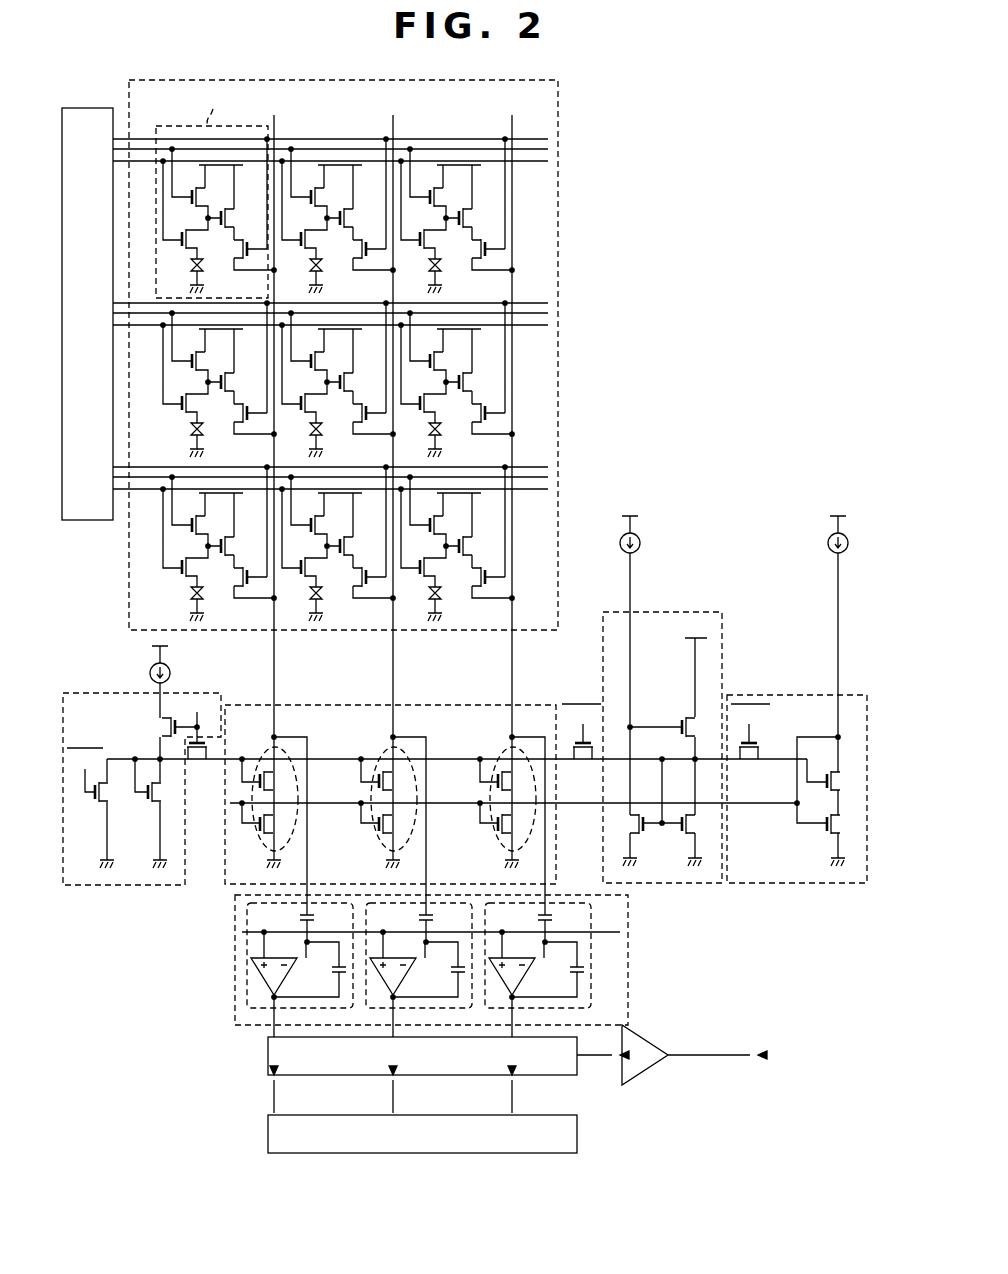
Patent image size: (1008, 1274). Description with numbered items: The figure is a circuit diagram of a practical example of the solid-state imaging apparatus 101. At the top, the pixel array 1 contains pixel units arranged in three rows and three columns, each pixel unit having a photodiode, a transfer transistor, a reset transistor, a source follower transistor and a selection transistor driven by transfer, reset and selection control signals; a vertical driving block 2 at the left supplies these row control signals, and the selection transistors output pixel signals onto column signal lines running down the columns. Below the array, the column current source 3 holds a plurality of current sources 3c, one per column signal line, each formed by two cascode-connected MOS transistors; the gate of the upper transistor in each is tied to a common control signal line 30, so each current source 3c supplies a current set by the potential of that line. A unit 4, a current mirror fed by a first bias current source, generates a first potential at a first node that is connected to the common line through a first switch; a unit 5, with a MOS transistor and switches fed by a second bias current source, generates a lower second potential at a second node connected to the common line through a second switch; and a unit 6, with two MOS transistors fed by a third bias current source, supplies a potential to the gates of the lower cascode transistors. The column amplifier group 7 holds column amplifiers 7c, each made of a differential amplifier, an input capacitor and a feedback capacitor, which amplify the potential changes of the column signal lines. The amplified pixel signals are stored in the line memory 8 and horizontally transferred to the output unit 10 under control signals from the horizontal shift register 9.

The solid-state imaging apparatus 101 is at (728, 141).
The pixel array 1 is at (562, 192).
The vertical scanning circuit 2 is at (95, 108).
The column current source 3 is at (344, 703).
The current source 3c is at (268, 844).
The unit 4 is at (699, 611).
The unit 5 is at (116, 690).
The unit 6 is at (776, 693).
The column amplifier group 7 is at (232, 913).
The column amplifier 7c is at (267, 965).
The line memory 8 is at (266, 1052).
The horizontal shift register 9 is at (578, 1132).
The output unit 10 is at (664, 1023).
The control signal line 30 is at (444, 758).